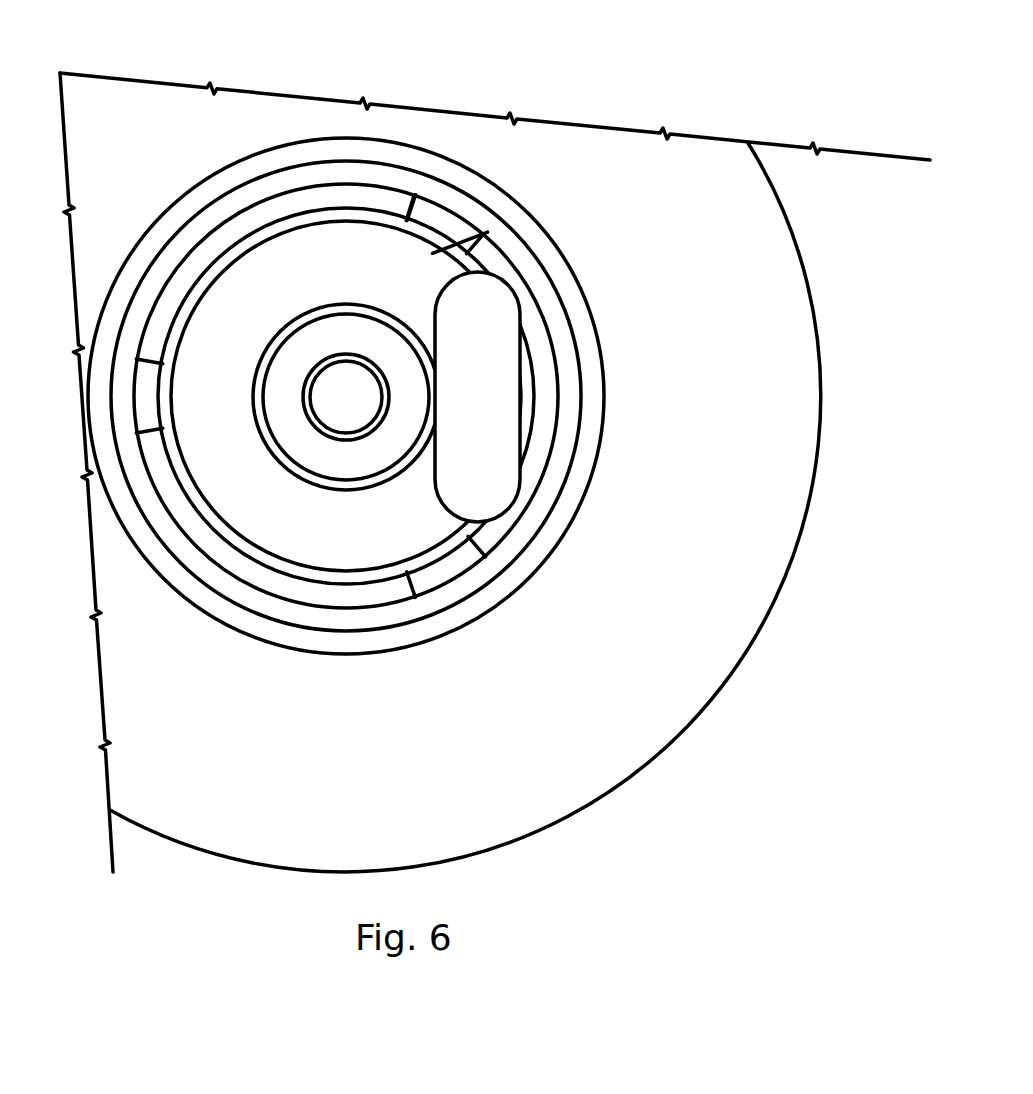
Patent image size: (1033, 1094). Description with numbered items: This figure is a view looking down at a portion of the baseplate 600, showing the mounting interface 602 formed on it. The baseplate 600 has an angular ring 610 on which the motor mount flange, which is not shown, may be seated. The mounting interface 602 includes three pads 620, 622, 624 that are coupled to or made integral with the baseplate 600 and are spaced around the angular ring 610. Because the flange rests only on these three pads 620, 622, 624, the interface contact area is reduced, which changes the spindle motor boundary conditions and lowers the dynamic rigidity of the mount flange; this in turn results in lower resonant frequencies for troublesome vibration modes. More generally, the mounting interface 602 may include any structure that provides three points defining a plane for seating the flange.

The baseplate 600 is at (398, 58).
The mounting interface 602 is at (229, 233).
The angular ring 610 is at (353, 600).
The pad 620 is at (452, 563).
The pad 622 is at (462, 228).
The pad 624 is at (145, 398).